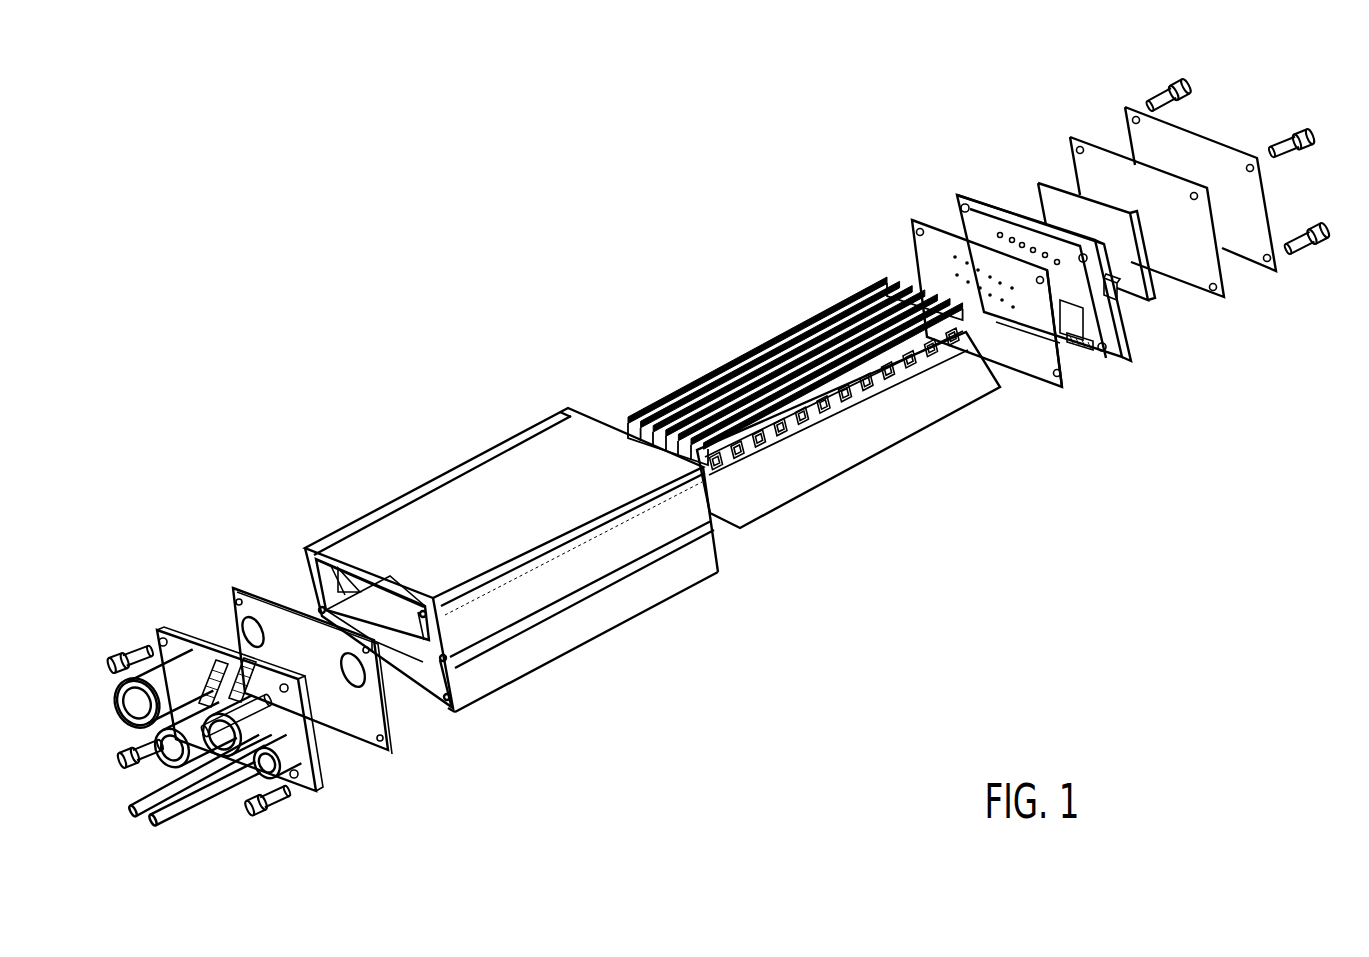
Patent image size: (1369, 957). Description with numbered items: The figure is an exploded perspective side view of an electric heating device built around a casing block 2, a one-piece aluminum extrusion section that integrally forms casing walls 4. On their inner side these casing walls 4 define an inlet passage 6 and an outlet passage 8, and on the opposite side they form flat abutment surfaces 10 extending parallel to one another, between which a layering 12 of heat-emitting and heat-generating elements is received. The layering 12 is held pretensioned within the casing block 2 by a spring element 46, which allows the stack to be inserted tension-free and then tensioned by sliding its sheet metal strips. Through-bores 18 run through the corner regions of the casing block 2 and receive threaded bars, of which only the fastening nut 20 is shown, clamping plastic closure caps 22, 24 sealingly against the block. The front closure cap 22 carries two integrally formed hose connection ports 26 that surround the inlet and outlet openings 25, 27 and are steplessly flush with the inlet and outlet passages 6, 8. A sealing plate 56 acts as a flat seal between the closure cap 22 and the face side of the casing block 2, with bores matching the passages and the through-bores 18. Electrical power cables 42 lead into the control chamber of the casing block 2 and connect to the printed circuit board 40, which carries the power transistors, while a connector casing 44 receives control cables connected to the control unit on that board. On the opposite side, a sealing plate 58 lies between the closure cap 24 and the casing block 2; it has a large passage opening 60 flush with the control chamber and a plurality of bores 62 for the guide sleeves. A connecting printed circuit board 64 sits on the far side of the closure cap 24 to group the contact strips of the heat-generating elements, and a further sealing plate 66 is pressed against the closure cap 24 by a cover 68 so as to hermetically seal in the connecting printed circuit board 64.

The casing block 2 is at (480, 444).
The casing walls 4 is at (330, 552).
The inlet passage 6 is at (312, 590).
The outlet passage 8 is at (458, 684).
The abutment surface 10 is at (414, 612).
The layering 12 is at (799, 307).
The through-bores 18 is at (568, 408).
The fastening nut 20 is at (1192, 85).
The closure cap 22 is at (171, 608).
The closure cap 24 is at (962, 196).
The inlet opening 25 is at (236, 800).
The connection ports 26 is at (108, 698).
The outlet opening 27 is at (117, 716).
The printed circuit board 40 is at (852, 443).
The electrical power cables 42 is at (156, 828).
The connector casing 44 is at (152, 779).
The spring element 46 is at (918, 352).
The sealing plate 56 is at (353, 735).
The sealing plate 58 is at (1066, 380).
The passage opening 60 is at (1012, 372).
The bores 62 is at (957, 275).
The connecting printed circuit board 64 is at (1038, 182).
The sealing plate 66 is at (1226, 298).
The cover 68 is at (1283, 193).